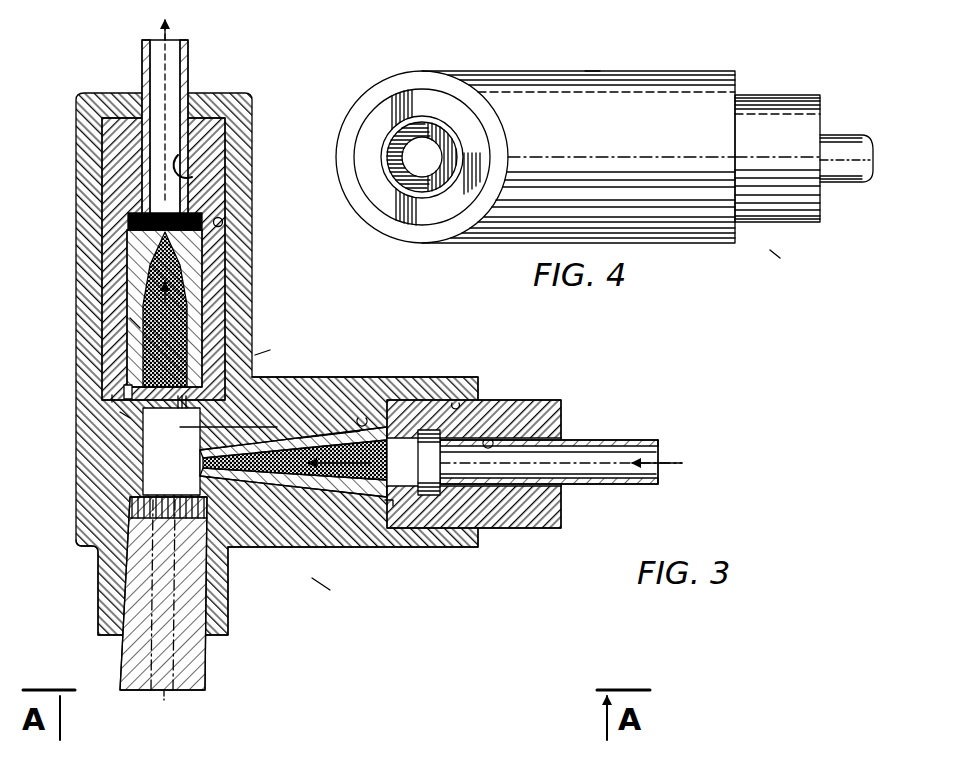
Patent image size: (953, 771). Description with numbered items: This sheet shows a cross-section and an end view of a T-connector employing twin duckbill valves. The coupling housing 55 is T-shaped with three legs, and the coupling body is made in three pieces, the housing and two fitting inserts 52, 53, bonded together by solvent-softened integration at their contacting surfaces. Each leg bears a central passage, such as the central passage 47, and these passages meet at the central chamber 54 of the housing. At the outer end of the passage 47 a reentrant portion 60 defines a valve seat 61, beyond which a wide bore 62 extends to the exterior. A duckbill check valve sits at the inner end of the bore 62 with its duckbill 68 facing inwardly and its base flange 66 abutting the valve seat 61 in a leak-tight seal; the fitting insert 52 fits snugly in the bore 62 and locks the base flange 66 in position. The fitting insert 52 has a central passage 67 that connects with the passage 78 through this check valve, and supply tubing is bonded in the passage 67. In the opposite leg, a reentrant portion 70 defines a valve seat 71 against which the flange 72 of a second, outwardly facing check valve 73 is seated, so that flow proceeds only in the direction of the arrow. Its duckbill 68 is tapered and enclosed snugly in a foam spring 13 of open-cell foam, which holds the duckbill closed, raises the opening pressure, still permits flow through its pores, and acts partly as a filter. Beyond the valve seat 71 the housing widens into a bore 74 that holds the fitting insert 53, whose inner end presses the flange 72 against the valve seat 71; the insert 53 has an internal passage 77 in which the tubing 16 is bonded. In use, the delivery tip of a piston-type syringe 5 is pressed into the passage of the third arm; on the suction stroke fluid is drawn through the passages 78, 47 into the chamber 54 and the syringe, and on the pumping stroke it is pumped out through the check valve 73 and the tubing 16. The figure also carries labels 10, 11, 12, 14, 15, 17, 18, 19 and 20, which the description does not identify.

In FIG. 3, the piston-type syringe 5 is at (643, 440).
In FIG. 4, the piston-type syringe 5 is at (850, 145).
In FIG. 3, the nozzle assembly 10 is at (320, 585).
In FIG. 4, the nozzle assembly 10 is at (775, 254).
In FIG. 3, the body 11 is at (455, 548).
In FIG. 4, the body 11 is at (666, 85).
In FIG. 3, the nozzle wall 12 is at (330, 425).
In FIG. 3, the foam spring 13 is at (140, 222).
In FIG. 3, the inlet boss / end face 14 is at (100, 555).
In FIG. 4, the inlet boss / end face 14 is at (382, 118).
In FIG. 3, the outer shell 15 is at (78, 190).
In FIG. 3, the tubing 16 is at (190, 58).
In FIG. 3, the lower surface of insert 17 is at (272, 420).
In FIG. 3, the inlet tube 18 is at (168, 560).
In FIG. 4, the inlet tube 18 is at (428, 157).
In FIG. 3, the vertical passage 19 is at (180, 372).
In FIG. 3, the axis line 20 is at (210, 665).
In FIG. 3, the central passage 47 is at (190, 582).
In FIG. 3, the fitting insert 52 is at (556, 410).
In FIG. 4, the fitting insert 52 is at (790, 103).
In FIG. 3, the fitting insert 53 is at (218, 300).
In FIG. 3, the central chamber 54 is at (185, 470).
In FIG. 3, the coupling housing 55 is at (270, 352).
In FIG. 4, the coupling housing 55 is at (592, 70).
In FIG. 3, the reentrant portion 60 is at (362, 418).
In FIG. 3, the valve seat 61 is at (362, 500).
In FIG. 3, the wide bore 62 is at (455, 403).
In FIG. 3, the base flange 66 is at (376, 505).
In FIG. 3, the central passage 67 is at (488, 440).
In FIG. 3, the duckbill 68 is at (215, 243).
In FIG. 3, the reentrant portion 70 is at (118, 398).
In FIG. 3, the valve seat 71 is at (128, 414).
In FIG. 3, the flange 72 is at (125, 390).
In FIG. 3, the check valve 73 is at (137, 323).
In FIG. 3, the bore 74 is at (222, 222).
In FIG. 3, the internal passage 77 is at (192, 177).
In FIG. 3, the passage 78 is at (293, 462).